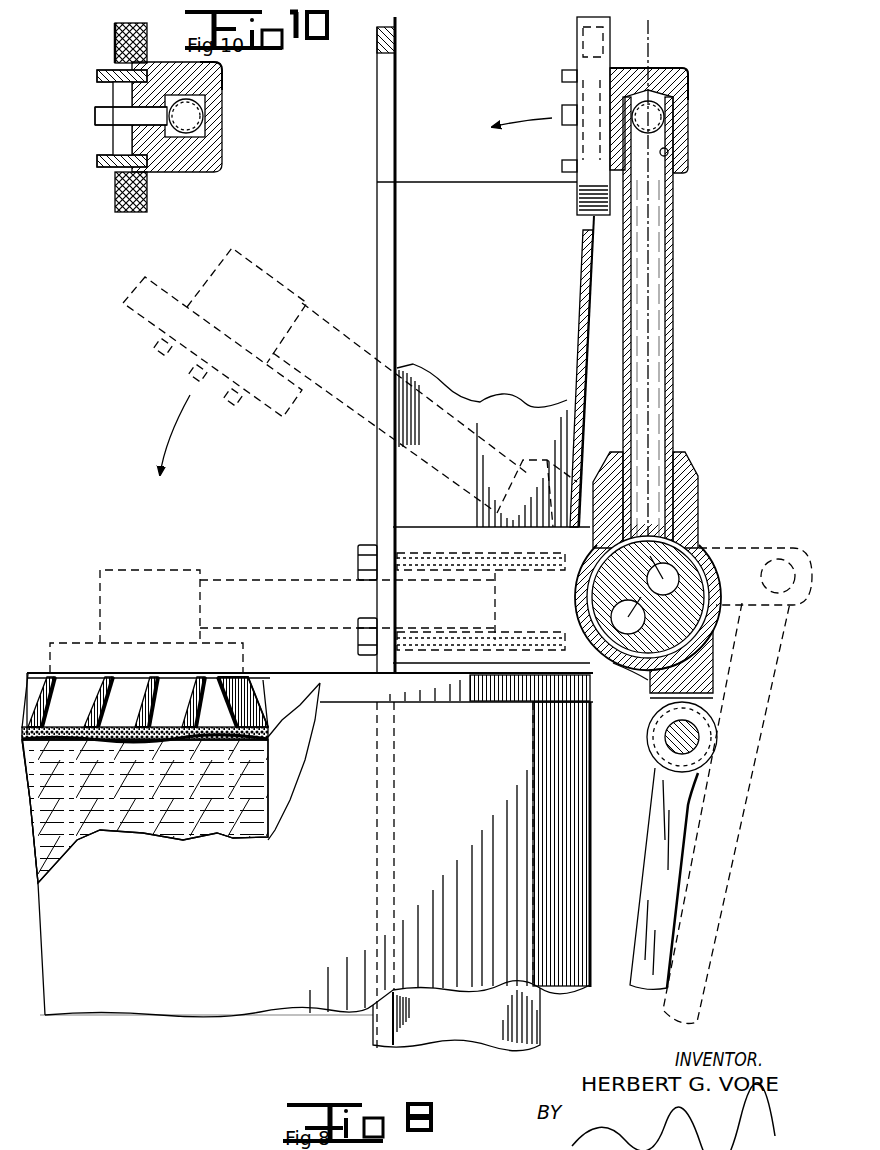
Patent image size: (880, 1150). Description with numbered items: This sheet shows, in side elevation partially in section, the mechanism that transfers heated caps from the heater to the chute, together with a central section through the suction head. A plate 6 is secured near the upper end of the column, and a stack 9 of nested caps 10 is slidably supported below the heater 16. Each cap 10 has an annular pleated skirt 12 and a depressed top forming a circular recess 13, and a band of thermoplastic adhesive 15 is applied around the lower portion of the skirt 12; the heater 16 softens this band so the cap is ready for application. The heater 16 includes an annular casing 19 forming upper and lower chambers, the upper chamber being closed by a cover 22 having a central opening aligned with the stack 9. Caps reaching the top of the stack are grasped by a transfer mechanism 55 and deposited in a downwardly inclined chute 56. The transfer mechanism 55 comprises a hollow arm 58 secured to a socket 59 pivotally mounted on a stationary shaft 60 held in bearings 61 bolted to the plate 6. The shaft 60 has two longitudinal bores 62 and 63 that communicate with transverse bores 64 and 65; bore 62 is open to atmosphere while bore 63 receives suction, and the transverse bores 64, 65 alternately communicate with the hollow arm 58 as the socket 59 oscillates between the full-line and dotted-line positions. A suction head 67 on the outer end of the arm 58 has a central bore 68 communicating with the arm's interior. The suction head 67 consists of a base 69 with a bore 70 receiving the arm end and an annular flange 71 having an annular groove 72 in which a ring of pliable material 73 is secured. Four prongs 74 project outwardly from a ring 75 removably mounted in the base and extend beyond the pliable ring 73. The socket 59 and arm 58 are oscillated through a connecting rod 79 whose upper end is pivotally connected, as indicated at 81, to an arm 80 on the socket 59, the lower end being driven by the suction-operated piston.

In FIG. 8, the plate 6 is at (397, 45).
In FIG. 8, the stack of nested caps 9 is at (225, 832).
In FIG. 8, the cap 10 is at (165, 705).
In FIG. 8, the annular pleated skirt 12 is at (258, 720).
In FIG. 8, the circular recess 13 is at (90, 690).
In FIG. 8, the band of thermoplastic adhesive 15 is at (133, 735).
In FIG. 8, the heater 16 is at (306, 845).
In FIG. 8, the annular casing 19 is at (218, 1012).
In FIG. 8, the cover 22 is at (343, 688).
In FIG. 8, the transfer mechanism 55 is at (702, 486).
In FIG. 8, the chute 56 is at (582, 393).
In FIG. 8, the hollow arm 58 is at (673, 340).
In FIG. 8, the socket 59 is at (702, 560).
In FIG. 8, the stationary shaft 60 is at (720, 617).
In FIG. 8, the bearings 61 is at (420, 527).
In FIG. 8, the longitudinal bore 62 is at (681, 587).
In FIG. 8, the longitudinal bore 63 is at (630, 668).
In FIG. 8, the transverse bore 64 is at (665, 545).
In FIG. 8, the transverse bore 65 is at (600, 600).
In FIG. 10, the suction head 67 is at (222, 165).
In FIG. 8, the suction head 67 is at (688, 116).
In FIG. 10, the central bore 68 is at (135, 116).
In FIG. 10, the base 69 is at (222, 78).
In FIG. 8, the base 69 is at (688, 72).
In FIG. 8, the bore 70 is at (670, 149).
In FIG. 10, the annular flange 71 is at (147, 35).
In FIG. 8, the annular flange 71 is at (577, 20).
In FIG. 10, the annular groove 72 is at (138, 212).
In FIG. 10, the ring of pliable material 73 is at (115, 45).
In FIG. 10, the prongs 74 is at (97, 76).
In FIG. 8, the prongs 74 is at (562, 78).
In FIG. 10, the ring 75 is at (128, 140).
In FIG. 8, the connecting rod 79 is at (770, 733).
In FIG. 8, the arm 80 is at (790, 548).
In FIG. 8, the pivotal connection 81 is at (667, 747).